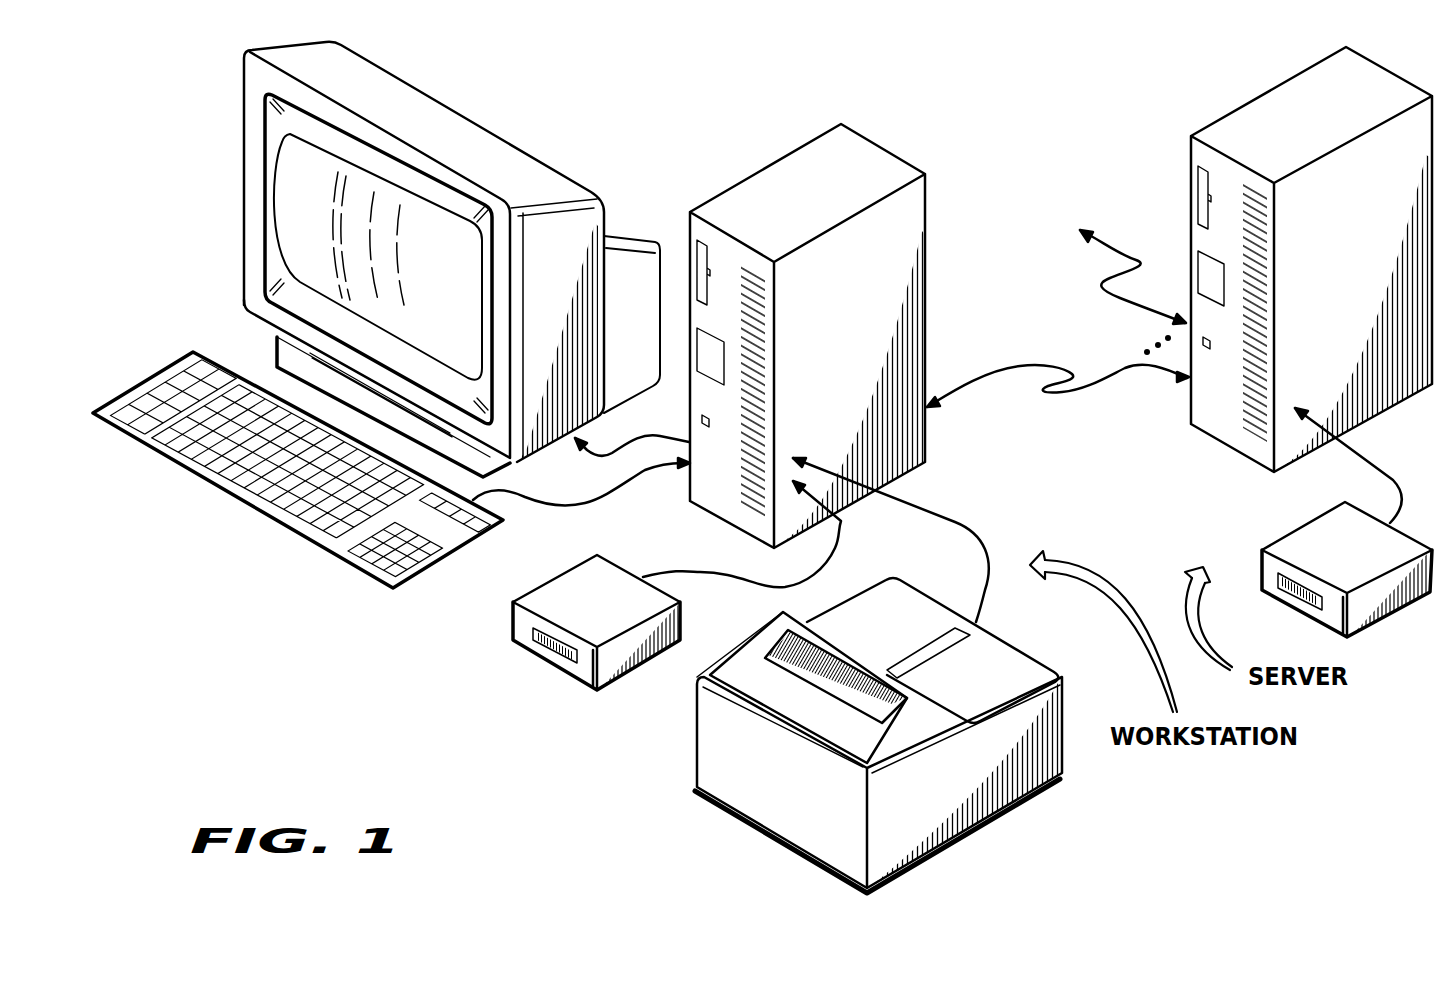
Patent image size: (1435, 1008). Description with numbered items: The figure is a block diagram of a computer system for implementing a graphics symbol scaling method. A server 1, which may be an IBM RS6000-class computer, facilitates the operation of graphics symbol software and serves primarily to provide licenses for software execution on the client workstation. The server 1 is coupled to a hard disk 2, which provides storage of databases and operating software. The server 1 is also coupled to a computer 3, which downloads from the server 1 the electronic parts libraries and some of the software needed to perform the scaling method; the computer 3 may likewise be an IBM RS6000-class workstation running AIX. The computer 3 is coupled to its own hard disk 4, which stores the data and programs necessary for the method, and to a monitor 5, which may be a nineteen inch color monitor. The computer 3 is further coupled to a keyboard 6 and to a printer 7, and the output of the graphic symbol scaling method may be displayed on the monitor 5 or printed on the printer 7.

The server 1 is at (1316, 253).
The hard disk 2 is at (1336, 565).
The computer 3 is at (825, 343).
The hard disk 4 is at (591, 619).
The monitor 5 is at (419, 304).
The keyboard 6 is at (297, 537).
The printer 7 is at (776, 789).